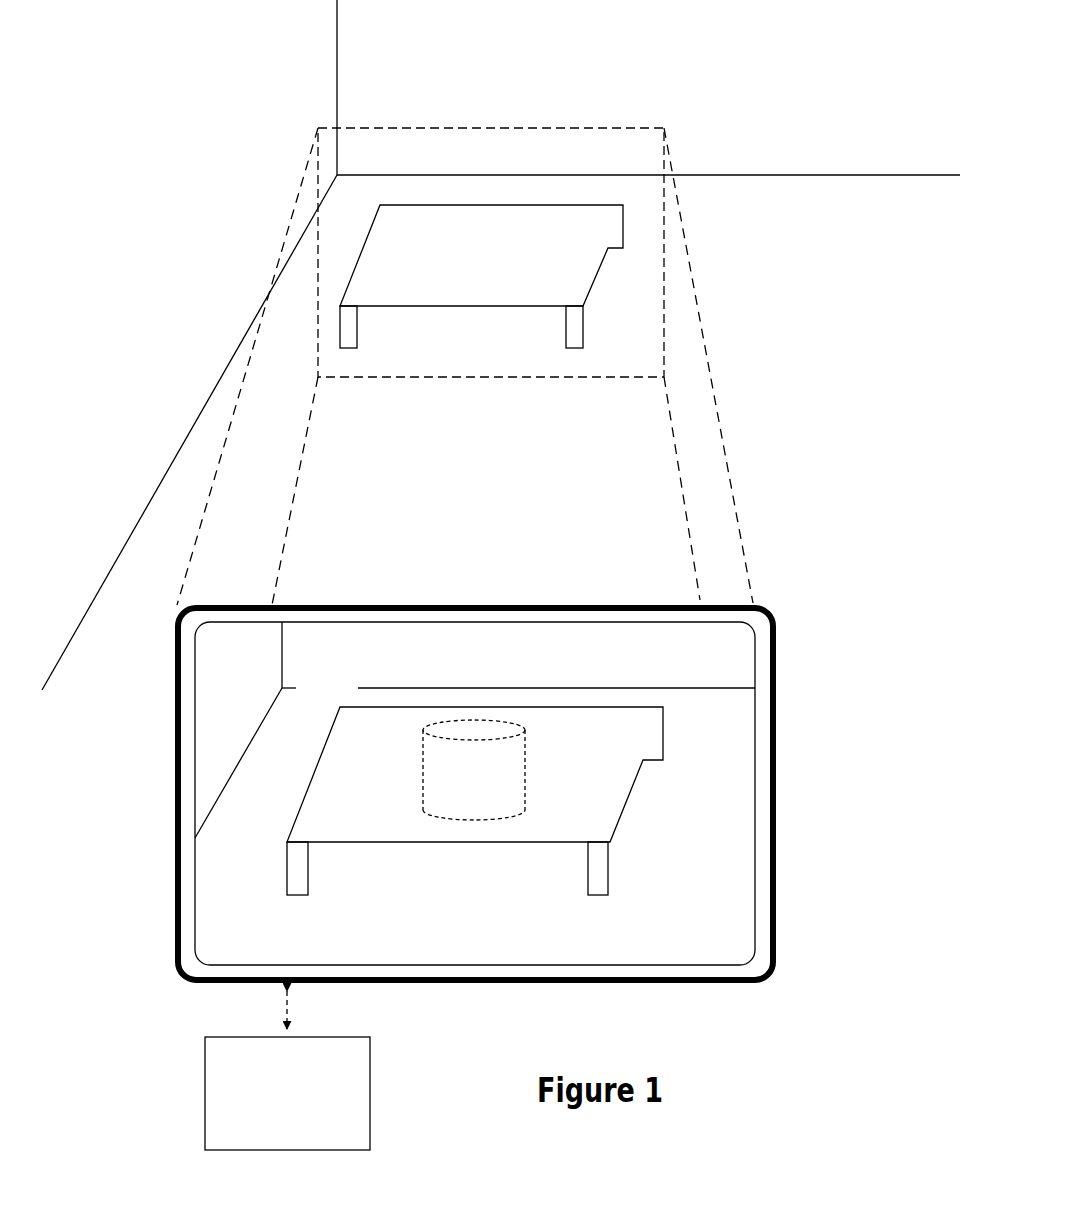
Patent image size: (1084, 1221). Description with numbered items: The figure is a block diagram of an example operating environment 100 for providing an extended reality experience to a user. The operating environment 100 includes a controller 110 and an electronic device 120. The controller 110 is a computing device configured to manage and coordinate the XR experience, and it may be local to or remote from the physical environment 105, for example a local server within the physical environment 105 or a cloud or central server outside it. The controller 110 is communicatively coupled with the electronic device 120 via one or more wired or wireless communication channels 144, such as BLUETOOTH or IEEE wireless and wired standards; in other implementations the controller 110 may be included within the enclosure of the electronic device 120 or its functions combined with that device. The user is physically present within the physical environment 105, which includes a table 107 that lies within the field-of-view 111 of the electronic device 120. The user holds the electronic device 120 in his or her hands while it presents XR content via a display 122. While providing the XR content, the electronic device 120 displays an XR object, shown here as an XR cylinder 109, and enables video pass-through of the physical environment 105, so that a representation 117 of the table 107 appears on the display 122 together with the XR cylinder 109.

The operating environment 100 is at (260, 52).
The physical environment 105 is at (870, 33).
The table 107 is at (523, 204).
The XR cylinder 109 is at (452, 729).
The controller 110 is at (357, 1107).
The field-of-view 111 is at (715, 392).
The representation of the table 117 is at (368, 707).
The electronic device 120 is at (174, 780).
The display 122 is at (210, 688).
The communication channels 144 is at (289, 1011).